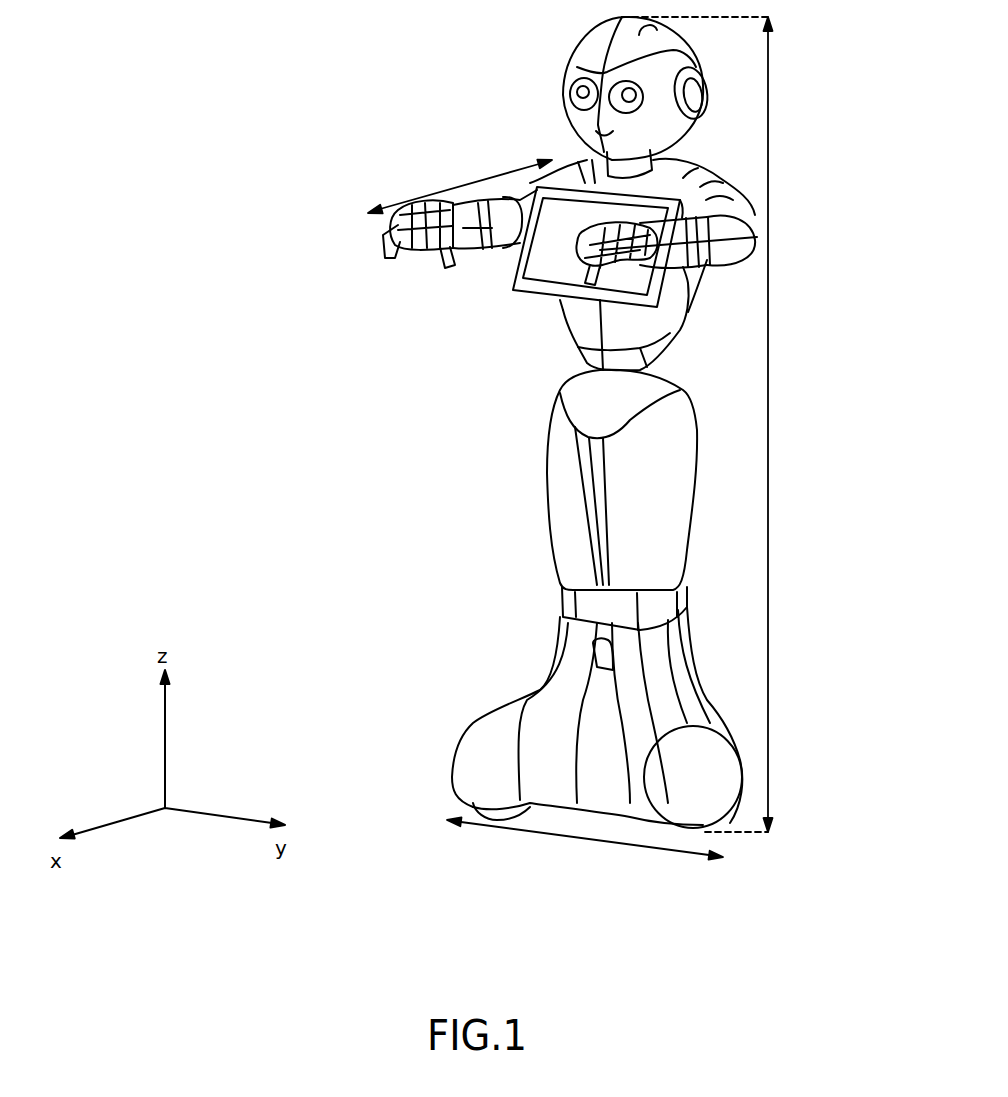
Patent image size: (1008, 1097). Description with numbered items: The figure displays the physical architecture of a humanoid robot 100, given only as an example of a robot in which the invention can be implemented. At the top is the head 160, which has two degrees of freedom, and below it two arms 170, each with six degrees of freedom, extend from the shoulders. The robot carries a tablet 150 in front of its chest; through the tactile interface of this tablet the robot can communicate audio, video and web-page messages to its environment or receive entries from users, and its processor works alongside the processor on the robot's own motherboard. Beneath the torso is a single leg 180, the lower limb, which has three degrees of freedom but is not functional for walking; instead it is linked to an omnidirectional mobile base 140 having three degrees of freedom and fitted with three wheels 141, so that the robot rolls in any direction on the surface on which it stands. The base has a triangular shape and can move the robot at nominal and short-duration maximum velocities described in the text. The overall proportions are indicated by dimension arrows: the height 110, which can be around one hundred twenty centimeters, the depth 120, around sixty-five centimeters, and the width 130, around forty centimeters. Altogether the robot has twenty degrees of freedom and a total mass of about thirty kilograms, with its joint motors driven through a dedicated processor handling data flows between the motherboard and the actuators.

The robot 100 is at (257, 191).
The height 110 is at (770, 400).
The depth 120 is at (472, 188).
The width 130 is at (548, 833).
The mobile base 140 is at (460, 732).
The wheels 141 is at (500, 805).
The tablet 150 is at (515, 292).
The head 160 is at (563, 70).
The arms 170 is at (747, 213).
The leg 180 is at (548, 513).